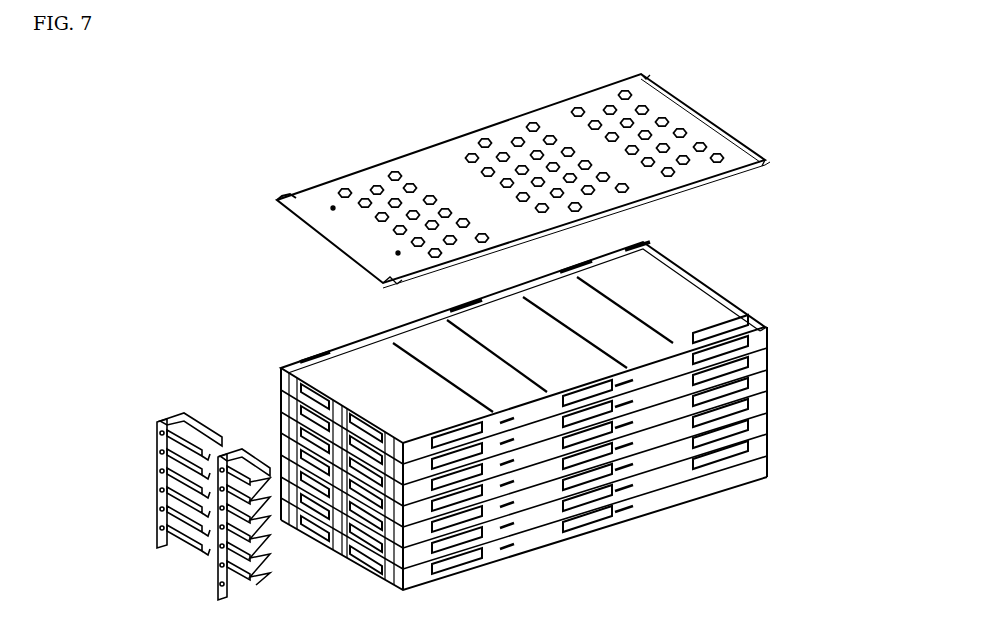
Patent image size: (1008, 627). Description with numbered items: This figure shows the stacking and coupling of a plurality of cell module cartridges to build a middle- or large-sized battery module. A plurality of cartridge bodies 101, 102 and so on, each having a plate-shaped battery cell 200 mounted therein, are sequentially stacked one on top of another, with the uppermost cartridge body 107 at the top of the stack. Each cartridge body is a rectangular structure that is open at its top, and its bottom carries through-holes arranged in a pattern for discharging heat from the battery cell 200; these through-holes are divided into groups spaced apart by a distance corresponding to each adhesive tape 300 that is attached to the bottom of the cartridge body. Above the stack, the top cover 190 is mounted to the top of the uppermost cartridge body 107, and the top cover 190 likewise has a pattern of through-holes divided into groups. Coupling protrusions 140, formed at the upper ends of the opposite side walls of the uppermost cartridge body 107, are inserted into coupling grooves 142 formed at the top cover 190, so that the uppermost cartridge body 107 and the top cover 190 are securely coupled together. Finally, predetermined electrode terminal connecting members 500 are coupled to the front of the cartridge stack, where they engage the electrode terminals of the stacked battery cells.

The top cover 190 is at (435, 158).
The coupling groove 142 is at (290, 192).
The battery cell 200 is at (350, 368).
The coupling protrusion 140 is at (413, 432).
The adhesive tape 300 is at (620, 318).
The uppermost cartridge body 107 is at (763, 335).
The cartridge body 102 is at (763, 437).
The cartridge body 101 is at (653, 492).
The electrode terminal connecting member 500 is at (155, 507).